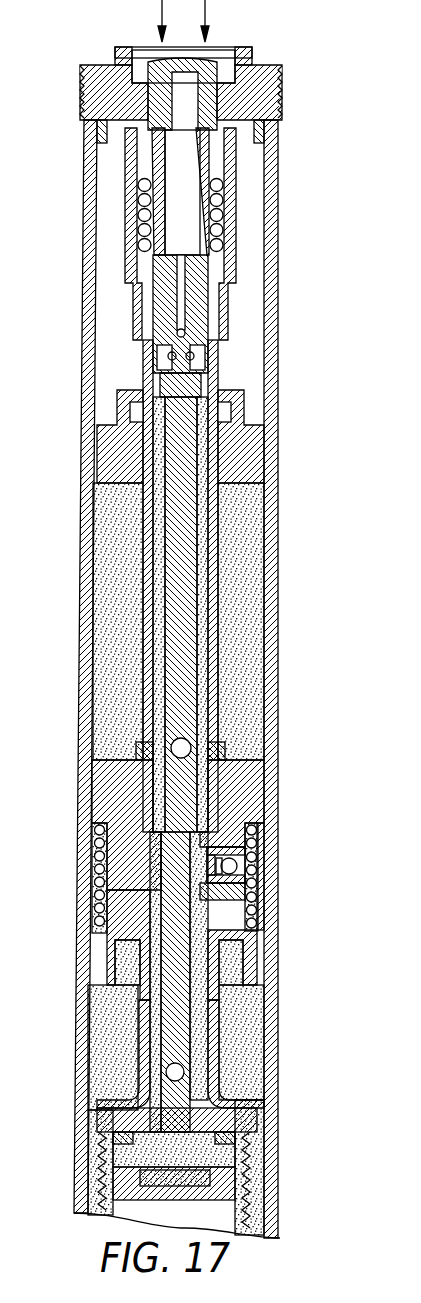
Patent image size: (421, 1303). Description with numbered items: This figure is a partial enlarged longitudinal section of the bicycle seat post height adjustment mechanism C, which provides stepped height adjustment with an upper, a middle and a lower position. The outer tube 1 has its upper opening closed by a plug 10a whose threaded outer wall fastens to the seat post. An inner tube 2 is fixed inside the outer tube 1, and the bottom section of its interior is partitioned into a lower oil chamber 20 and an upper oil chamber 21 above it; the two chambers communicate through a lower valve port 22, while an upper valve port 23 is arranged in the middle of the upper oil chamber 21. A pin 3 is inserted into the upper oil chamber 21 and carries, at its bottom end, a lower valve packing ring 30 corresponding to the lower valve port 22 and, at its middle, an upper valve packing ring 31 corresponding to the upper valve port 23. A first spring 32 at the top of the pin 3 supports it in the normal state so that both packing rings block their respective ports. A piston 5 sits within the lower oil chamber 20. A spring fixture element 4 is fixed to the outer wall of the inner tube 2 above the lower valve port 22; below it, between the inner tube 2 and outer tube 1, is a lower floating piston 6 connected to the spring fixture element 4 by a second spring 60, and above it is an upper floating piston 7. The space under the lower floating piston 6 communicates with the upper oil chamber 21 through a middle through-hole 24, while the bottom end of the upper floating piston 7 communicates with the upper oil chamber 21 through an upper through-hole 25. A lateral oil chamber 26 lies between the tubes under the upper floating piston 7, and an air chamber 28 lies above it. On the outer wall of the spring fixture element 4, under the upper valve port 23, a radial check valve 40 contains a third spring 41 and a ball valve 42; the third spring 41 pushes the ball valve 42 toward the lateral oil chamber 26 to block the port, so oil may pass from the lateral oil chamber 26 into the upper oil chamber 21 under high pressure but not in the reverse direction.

The plug 10a is at (280, 85).
The first spring 32 is at (222, 213).
The air chamber 28 is at (255, 262).
The outer tube 1 is at (272, 310).
The upper floating piston 7 is at (237, 432).
The upper oil chamber 21 is at (203, 476).
The bicycle seat post height adjustment mechanism C is at (292, 516).
The pin 3 is at (183, 609).
The inner tube 2 is at (202, 653).
The lateral oil chamber 26 is at (243, 703).
The upper through-hole 25 is at (148, 752).
The spring fixture element 4 is at (237, 787).
The upper valve packing ring 31 is at (257, 843).
The third spring 41 is at (252, 856).
The ball valve 42 is at (232, 868).
The radial check valve 40 is at (287, 863).
The second spring 60 is at (103, 855).
The upper valve port 23 is at (213, 893).
The lower floating piston 6 is at (250, 938).
The middle through-hole 24 is at (148, 1072).
The lower valve packing ring 30 is at (112, 1128).
The lower valve port 22 is at (207, 1133).
The lower oil chamber 20 is at (115, 1152).
The piston 5 is at (240, 1193).